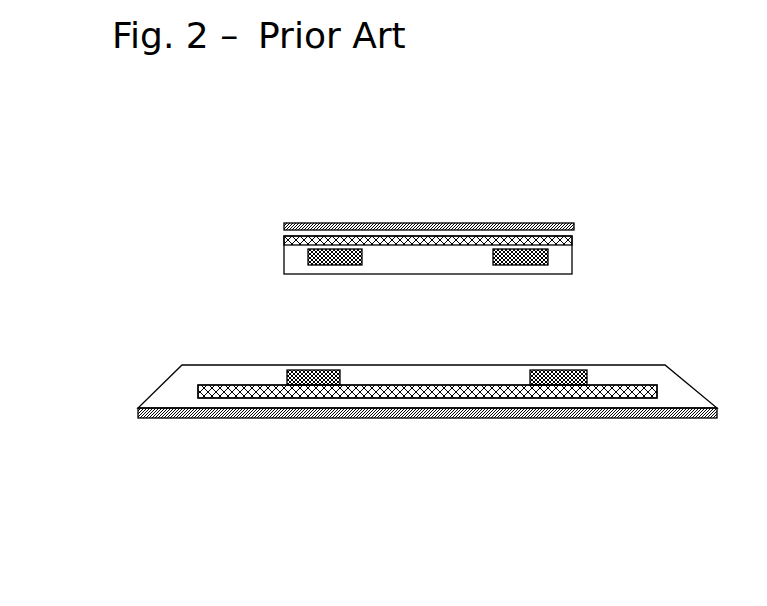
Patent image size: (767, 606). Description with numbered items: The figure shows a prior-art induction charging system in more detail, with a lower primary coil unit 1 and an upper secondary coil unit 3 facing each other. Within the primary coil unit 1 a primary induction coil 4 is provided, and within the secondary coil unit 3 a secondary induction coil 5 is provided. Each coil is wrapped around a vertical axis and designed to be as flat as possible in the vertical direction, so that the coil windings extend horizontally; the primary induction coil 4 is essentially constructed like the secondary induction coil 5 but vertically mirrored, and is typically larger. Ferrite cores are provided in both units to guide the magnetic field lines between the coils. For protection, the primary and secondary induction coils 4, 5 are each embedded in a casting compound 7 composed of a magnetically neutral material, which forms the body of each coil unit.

The primary coil unit 1 is at (188, 468).
The secondary coil unit 3 is at (215, 213).
The primary induction coil 4 is at (290, 367).
The secondary induction coil 5 is at (310, 257).
The casting compound 7 is at (565, 258).